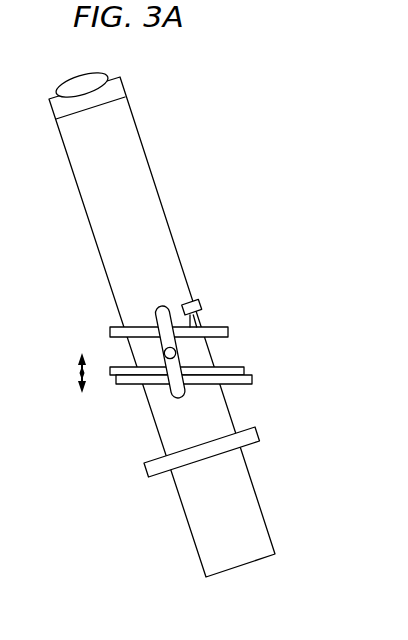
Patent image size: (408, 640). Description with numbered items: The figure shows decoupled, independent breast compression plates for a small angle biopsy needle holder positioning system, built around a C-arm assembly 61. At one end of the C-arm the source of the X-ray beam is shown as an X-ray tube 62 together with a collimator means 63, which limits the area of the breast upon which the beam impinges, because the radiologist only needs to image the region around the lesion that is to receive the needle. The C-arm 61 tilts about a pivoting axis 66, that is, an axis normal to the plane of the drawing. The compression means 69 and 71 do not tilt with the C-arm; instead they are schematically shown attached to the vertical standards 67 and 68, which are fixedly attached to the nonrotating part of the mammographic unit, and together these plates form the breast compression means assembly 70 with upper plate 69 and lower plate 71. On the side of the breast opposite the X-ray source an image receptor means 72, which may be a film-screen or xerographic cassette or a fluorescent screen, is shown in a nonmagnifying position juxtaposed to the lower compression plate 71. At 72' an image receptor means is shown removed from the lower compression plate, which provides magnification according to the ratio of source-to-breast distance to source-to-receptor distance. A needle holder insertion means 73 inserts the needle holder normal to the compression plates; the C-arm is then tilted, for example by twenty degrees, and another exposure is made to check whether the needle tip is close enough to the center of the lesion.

The C-arm assembly 61 is at (192, 156).
The X-ray tube 62 is at (92, 74).
The collimator means 63 is at (118, 90).
The pivoting axis 66 is at (166, 358).
The vertical standard 67 is at (157, 313).
The vertical standard 68 is at (175, 358).
The upper compression plate 69 is at (228, 331).
The breast compression means assembly 70 is at (114, 384).
The lower compression plate 71 is at (244, 370).
The image receptor means 72 is at (218, 390).
The image receptor means (magnifying position) 72' is at (239, 449).
The needle holder insertion means 73 is at (200, 304).